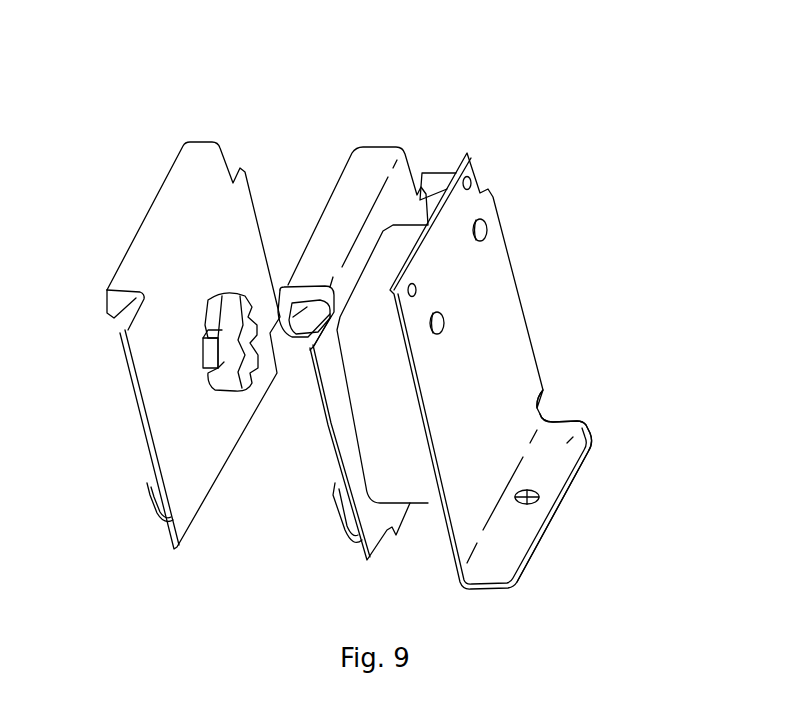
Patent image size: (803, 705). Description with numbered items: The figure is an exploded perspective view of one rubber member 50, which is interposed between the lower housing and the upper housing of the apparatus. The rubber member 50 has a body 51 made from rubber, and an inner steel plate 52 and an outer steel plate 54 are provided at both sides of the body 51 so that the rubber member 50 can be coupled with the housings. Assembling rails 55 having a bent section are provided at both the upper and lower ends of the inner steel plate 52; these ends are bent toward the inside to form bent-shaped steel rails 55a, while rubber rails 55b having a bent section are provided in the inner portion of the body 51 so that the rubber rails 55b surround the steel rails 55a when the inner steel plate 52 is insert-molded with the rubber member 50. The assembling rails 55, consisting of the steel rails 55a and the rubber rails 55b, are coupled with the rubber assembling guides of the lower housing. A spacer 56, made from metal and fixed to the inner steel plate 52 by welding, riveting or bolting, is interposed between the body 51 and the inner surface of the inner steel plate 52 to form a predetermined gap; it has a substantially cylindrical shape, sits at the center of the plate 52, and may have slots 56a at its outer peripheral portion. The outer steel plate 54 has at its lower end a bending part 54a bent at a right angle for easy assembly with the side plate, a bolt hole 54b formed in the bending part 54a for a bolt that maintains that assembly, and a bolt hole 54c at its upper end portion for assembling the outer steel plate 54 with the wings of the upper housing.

The rubber member 50 is at (535, 152).
The body 51 is at (390, 265).
The inner steel plate 52 is at (147, 455).
The outer steel plate 54 is at (507, 350).
The bending part 54a is at (583, 422).
The bolt hole 54b is at (527, 493).
The bolt hole 54c is at (487, 232).
The assembling rail 55 is at (200, 32).
The steel rail 55a is at (127, 282).
The rubber rail 55b is at (317, 275).
The spacer 56 is at (240, 378).
The slot 56a is at (217, 330).